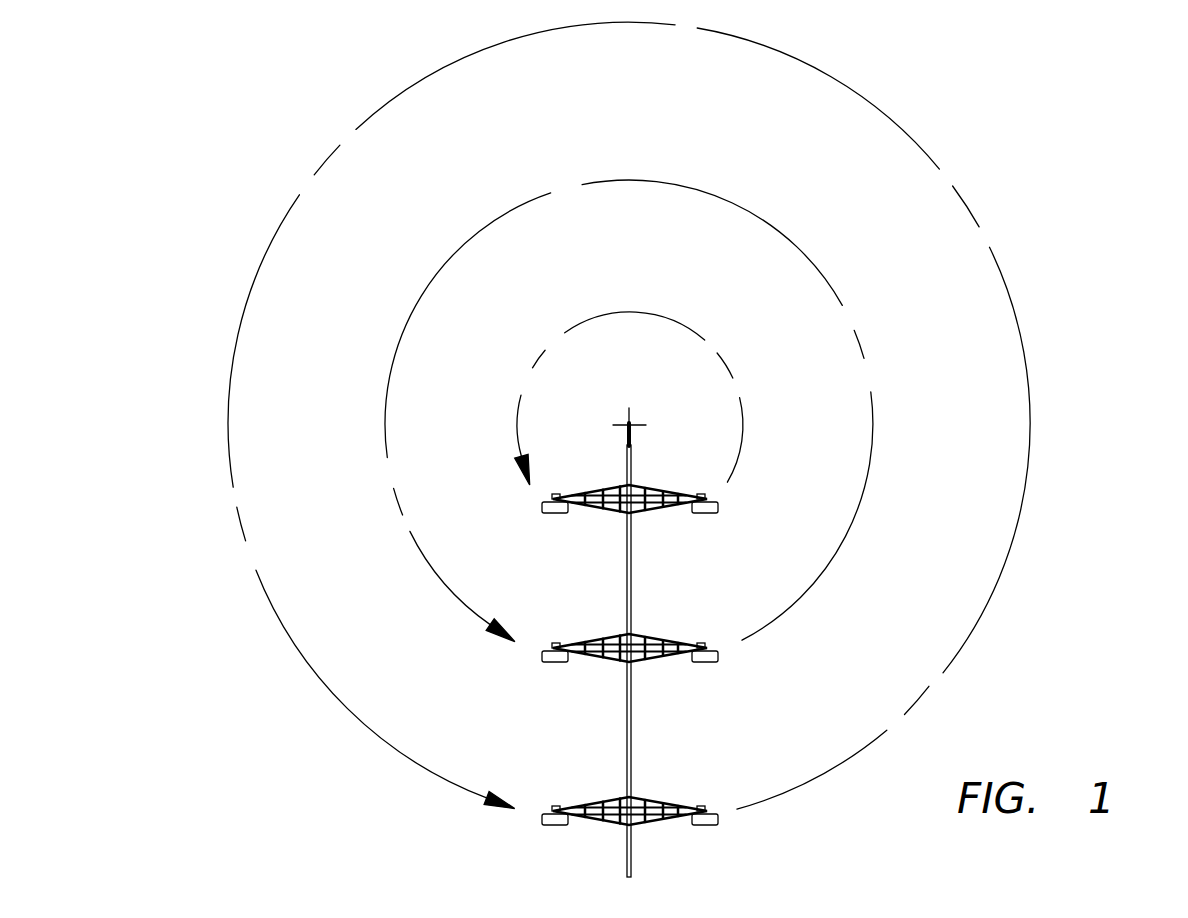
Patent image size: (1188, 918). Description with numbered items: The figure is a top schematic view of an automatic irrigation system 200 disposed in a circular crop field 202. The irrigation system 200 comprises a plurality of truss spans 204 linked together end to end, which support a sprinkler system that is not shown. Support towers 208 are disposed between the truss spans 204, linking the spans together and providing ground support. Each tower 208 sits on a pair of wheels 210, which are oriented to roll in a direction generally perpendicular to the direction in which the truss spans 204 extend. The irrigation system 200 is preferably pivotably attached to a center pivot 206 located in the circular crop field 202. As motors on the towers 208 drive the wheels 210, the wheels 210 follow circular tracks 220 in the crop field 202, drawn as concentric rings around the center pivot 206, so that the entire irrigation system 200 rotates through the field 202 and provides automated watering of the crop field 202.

The automatic irrigation system 200 is at (637, 634).
The circular crop field 202 is at (696, 415).
The truss span 204 is at (626, 573).
The center pivot 206 is at (628, 425).
The support tower 208 is at (652, 510).
The wheel 210 is at (718, 503).
The circular track 220 is at (853, 90).